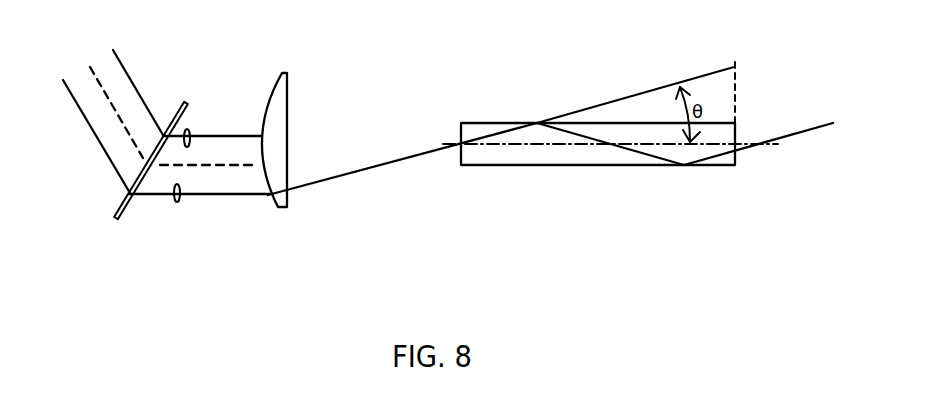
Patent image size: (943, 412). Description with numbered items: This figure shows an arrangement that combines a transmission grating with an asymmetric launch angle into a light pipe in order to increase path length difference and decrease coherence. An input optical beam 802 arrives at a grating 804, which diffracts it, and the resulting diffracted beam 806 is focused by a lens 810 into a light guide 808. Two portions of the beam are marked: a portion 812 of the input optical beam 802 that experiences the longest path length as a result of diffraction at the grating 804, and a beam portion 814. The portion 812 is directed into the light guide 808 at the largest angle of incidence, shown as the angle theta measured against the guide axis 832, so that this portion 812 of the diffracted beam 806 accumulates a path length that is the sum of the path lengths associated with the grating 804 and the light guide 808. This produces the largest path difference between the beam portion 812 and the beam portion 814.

The input optical beam 802 is at (113, 50).
The grating 804 is at (120, 208).
The diffracted beam 806 is at (222, 185).
The light guide 808 is at (642, 165).
The lens 810 is at (283, 73).
The portion of the input optical beam 812 is at (177, 202).
The beam portion 814 is at (187, 129).
The optical axis 832 is at (563, 145).